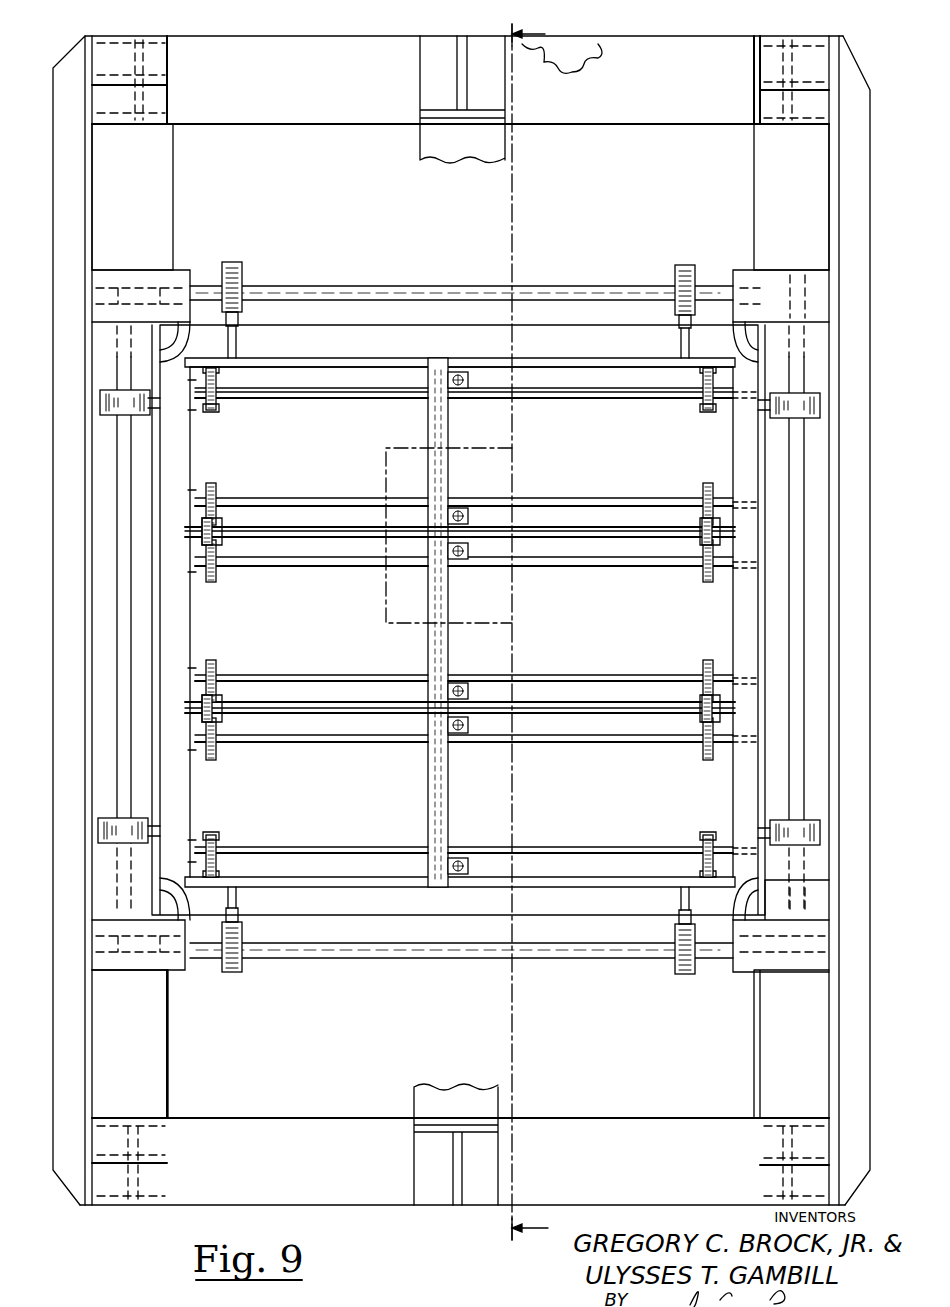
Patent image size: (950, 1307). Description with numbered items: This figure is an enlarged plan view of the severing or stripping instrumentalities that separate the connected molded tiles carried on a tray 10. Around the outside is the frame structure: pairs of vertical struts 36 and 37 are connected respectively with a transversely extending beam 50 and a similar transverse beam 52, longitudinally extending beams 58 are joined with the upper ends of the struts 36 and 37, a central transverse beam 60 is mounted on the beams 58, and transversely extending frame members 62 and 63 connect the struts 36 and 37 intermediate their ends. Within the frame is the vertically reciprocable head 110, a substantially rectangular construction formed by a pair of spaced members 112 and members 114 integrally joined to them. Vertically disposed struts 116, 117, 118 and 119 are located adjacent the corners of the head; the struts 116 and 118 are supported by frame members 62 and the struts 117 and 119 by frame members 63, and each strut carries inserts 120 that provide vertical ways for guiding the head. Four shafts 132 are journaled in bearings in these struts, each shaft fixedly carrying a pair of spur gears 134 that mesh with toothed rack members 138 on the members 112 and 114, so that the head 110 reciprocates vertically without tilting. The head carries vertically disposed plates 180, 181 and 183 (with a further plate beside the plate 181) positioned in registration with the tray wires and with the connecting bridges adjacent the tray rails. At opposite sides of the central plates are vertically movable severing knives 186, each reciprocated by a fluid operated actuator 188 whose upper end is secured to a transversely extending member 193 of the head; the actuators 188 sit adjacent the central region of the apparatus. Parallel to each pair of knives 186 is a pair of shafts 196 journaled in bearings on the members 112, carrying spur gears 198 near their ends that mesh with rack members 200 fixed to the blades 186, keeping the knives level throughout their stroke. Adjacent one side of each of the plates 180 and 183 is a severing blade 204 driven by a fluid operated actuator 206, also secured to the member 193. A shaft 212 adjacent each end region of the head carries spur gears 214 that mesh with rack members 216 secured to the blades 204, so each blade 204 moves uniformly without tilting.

The carrier or tray 10 is at (557, 633).
The vertical frame members or struts 36 is at (176, 120).
The vertical frame members or struts 37 is at (748, 120).
The transversely extending beam or frame member 50 is at (58, 80).
The transversely extending beam 52 is at (870, 92).
The longitudinally extending beams 58 is at (246, 126).
The central beam or frame member 60 is at (420, 146).
The transversely extending frame members 62 is at (120, 192).
The transversely extending frame members 63 is at (777, 199).
The vertically reciprocable head construction 110 is at (532, 325).
The spaced members 112 is at (130, 460).
The members 114 is at (545, 318).
The vertically disposed strut 116 is at (190, 270).
The vertically disposed strut 117 is at (746, 270).
The vertically disposed strut 118 is at (178, 972).
The vertically disposed strut 119 is at (745, 974).
The inserts 120 is at (160, 376).
The shafts 132 is at (356, 286).
The spur gears 134 is at (246, 262).
The toothed rack means or members 138 is at (240, 332).
The vertically disposed plate 180 is at (336, 878).
The vertically disposed plate 181 is at (320, 700).
The vertically disposed plate 183 is at (314, 390).
The severing or stripping knives 186 is at (310, 566).
The fluid operated actuators 188 is at (470, 518).
The transversely extending member 193 is at (448, 594).
The shafts 196 is at (292, 486).
The spur gears 198 is at (208, 484).
The toothed or rack member 200 is at (224, 520).
The severing blade or knife 204 is at (340, 388).
The fluid operated actuators 206 is at (470, 388).
The shaft 212 is at (388, 396).
The spur gear 214 is at (208, 410).
The toothed or rack member 216 is at (218, 374).